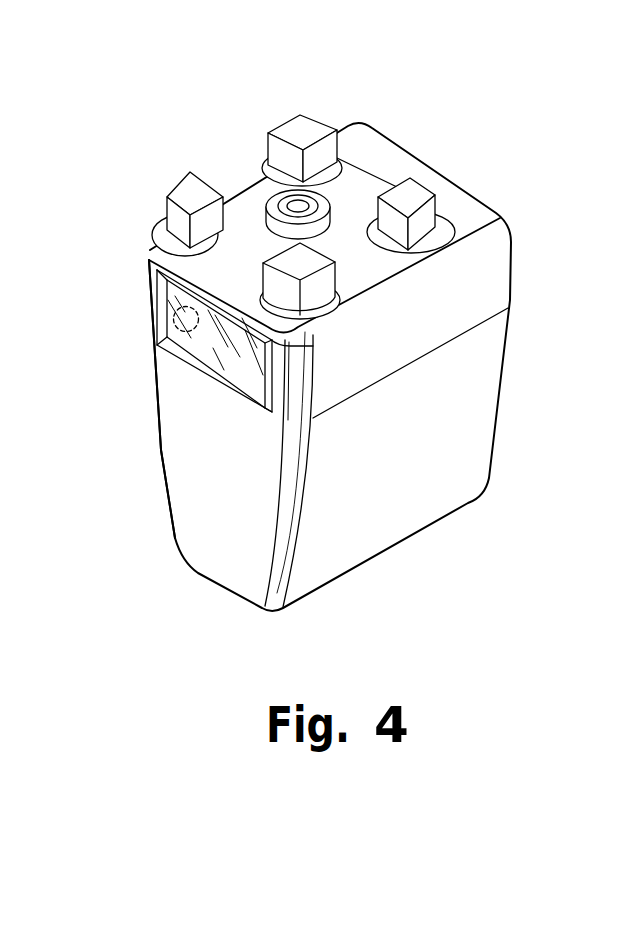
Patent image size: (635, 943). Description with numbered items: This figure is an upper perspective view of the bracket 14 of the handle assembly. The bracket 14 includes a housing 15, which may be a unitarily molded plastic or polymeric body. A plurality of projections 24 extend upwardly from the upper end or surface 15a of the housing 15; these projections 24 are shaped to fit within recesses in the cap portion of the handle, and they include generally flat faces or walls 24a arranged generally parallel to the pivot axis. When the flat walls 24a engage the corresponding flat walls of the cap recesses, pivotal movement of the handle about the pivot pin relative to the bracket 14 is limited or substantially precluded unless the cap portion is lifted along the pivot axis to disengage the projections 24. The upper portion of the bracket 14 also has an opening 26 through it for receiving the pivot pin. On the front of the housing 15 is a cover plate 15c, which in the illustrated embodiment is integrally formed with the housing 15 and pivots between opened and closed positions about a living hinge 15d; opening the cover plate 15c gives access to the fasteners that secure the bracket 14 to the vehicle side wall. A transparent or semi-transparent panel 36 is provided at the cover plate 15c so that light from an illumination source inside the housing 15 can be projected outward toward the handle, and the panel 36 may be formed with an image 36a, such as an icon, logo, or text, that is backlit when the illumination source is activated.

The bracket 14 is at (325, 350).
The housing 15 is at (402, 499).
The upper end or surface of housing 15a is at (253, 185).
The front cover plate 15c is at (197, 507).
The living hinge 15d is at (274, 613).
The projections 24 is at (186, 190).
The flat faces or walls 24a is at (153, 259).
The opening 26 is at (304, 207).
The transparent or semi-transparent panel 36 is at (212, 345).
The image 36a is at (172, 327).